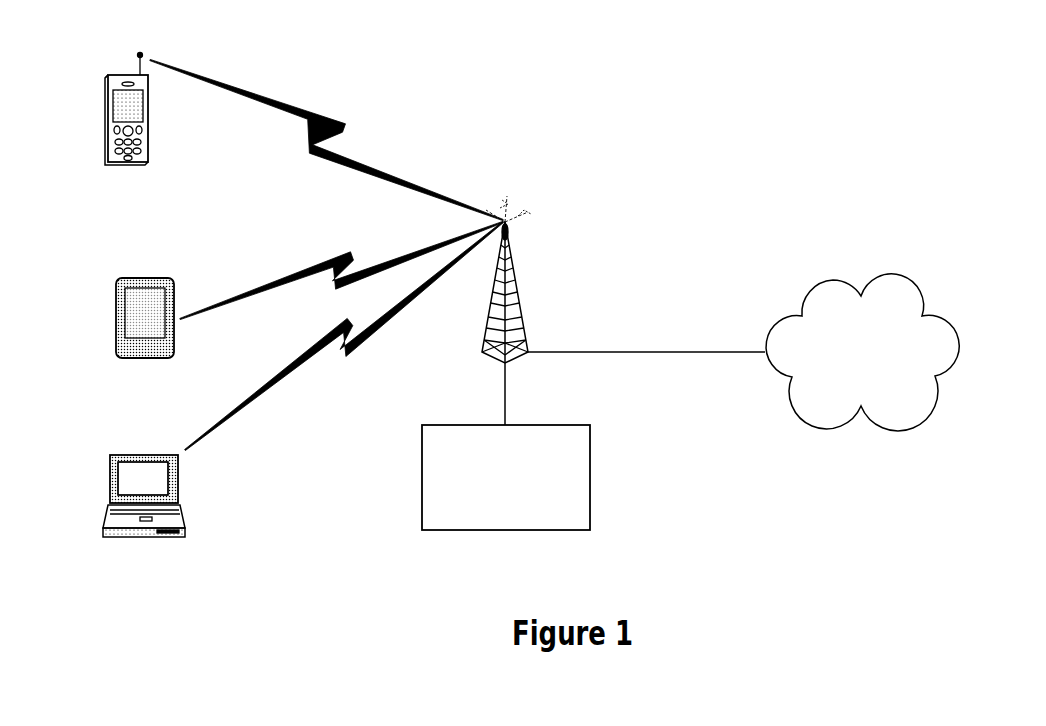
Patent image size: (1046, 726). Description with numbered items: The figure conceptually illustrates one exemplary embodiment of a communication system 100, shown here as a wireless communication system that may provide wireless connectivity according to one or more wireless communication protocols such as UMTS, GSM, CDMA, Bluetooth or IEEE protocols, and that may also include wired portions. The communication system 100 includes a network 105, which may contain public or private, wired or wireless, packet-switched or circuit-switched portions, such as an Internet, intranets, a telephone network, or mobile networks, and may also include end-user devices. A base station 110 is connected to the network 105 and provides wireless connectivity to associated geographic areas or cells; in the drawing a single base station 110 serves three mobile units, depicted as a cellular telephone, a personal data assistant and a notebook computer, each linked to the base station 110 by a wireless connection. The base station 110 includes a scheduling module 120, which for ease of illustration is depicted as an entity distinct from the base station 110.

The communication system 100 is at (740, 69).
The network 105 is at (862, 352).
The base station 110 is at (523, 291).
The scheduling module 120 is at (506, 477).